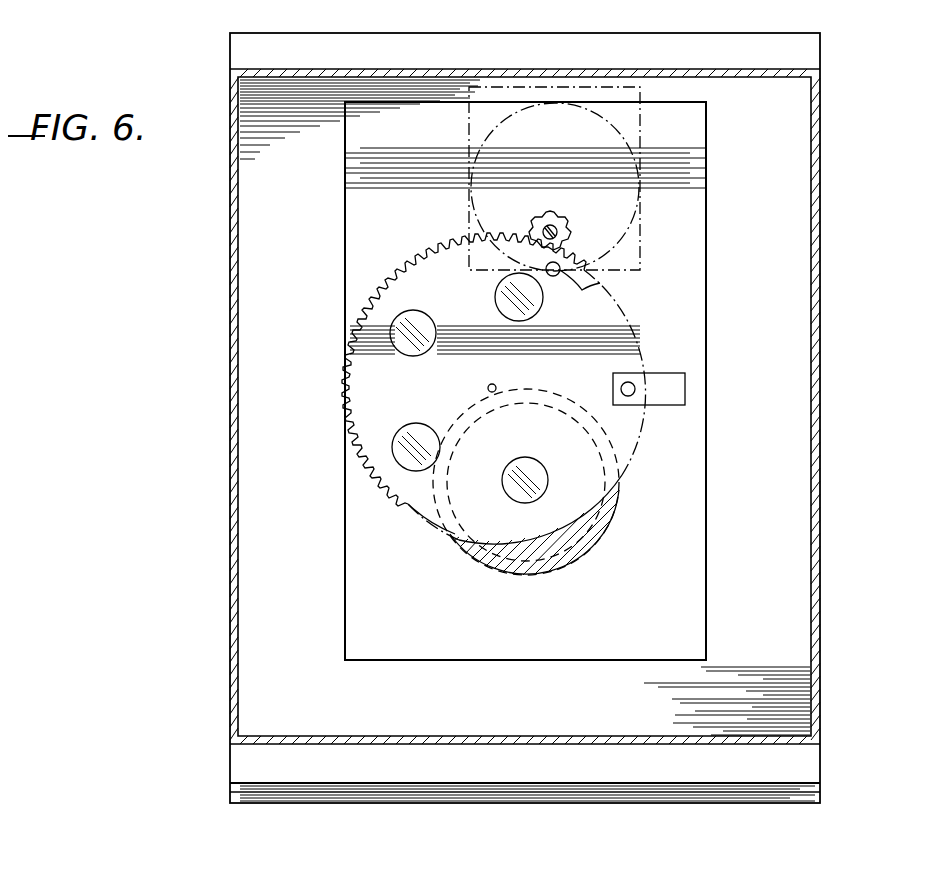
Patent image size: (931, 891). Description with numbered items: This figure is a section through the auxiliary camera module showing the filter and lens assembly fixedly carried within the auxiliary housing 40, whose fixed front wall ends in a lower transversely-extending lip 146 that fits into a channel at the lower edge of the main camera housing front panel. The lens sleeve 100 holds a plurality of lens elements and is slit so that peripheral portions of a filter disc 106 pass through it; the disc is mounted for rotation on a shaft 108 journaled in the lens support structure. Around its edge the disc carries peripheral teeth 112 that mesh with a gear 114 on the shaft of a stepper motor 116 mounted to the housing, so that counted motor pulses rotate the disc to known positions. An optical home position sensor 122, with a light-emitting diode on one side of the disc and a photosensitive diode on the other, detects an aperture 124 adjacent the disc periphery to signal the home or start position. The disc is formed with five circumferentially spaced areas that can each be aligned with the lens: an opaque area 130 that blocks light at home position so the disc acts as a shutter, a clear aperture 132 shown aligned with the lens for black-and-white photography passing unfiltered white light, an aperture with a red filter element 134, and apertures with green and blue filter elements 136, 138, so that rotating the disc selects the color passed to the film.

The auxiliary housing 40 is at (212, 231).
The lens sleeve 100 is at (562, 565).
The filter disc 106 is at (440, 270).
The shaft 108 is at (490, 385).
The peripheral teeth 112 is at (456, 242).
The gear 114 is at (566, 226).
The stepper motor 116 is at (487, 133).
The optical home position sensor 122 is at (650, 373).
The aperture 124 is at (590, 277).
The opaque area 130 is at (586, 387).
The clear aperture 132 is at (528, 457).
The red filter element 134 is at (408, 423).
The green filter element 136 is at (420, 311).
The blue filter element 138 is at (541, 300).
The lower lip 146 is at (240, 797).